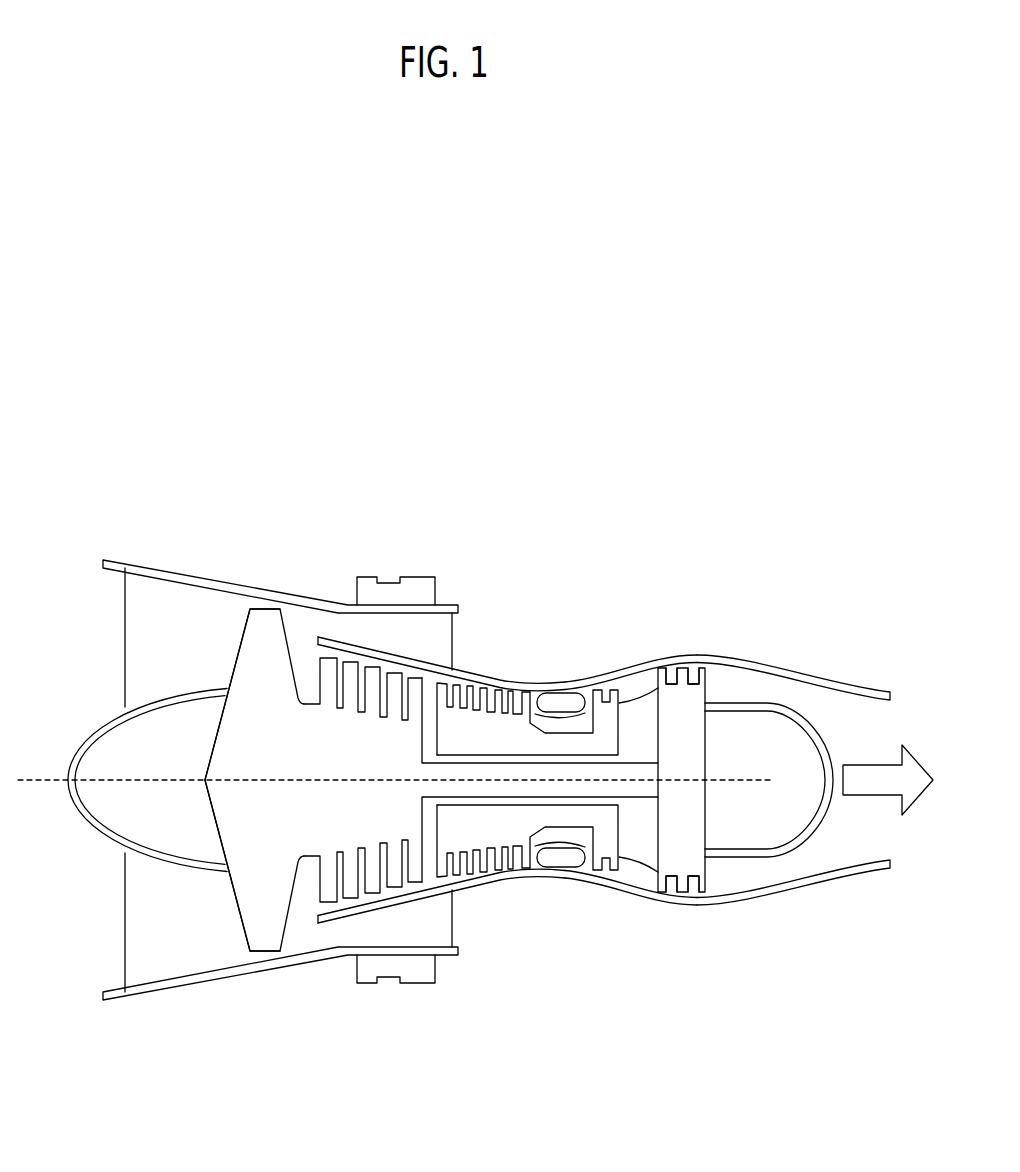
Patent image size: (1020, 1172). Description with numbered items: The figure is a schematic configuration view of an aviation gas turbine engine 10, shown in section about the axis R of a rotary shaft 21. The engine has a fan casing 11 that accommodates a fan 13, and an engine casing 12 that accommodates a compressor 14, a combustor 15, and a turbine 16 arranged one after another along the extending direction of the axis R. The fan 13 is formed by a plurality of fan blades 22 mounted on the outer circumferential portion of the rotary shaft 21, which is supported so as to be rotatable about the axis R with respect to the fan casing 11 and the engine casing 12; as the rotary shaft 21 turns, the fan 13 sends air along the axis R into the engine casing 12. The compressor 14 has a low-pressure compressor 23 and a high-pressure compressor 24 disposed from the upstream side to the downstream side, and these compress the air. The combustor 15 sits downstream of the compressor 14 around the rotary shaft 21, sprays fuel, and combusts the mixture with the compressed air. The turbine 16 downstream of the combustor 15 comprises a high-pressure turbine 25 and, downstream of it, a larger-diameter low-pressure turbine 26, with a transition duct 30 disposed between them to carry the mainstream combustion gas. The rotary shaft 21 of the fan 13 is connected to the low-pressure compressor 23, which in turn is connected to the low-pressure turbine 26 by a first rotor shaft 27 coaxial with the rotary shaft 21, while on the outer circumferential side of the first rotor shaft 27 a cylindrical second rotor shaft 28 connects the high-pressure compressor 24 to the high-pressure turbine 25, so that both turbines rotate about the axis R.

The gas turbine engine 10 is at (223, 541).
The fan casing 11 is at (160, 1000).
The engine casing 12 is at (832, 680).
The fan 13 is at (229, 667).
The compressor 14 is at (433, 646).
The combustor 15 is at (540, 673).
The turbine 16 is at (670, 640).
The rotary shaft 21 is at (237, 807).
The fan blade 22 is at (262, 627).
The low-pressure compressor 23 is at (355, 828).
The high-pressure compressor 24 is at (497, 822).
The high-pressure turbine 25 is at (598, 838).
The low-pressure turbine 26 is at (683, 847).
The first rotor shaft 27 is at (528, 790).
The second rotor shaft 28 is at (563, 815).
The transition duct 30 is at (640, 683).
The axis R is at (38, 776).